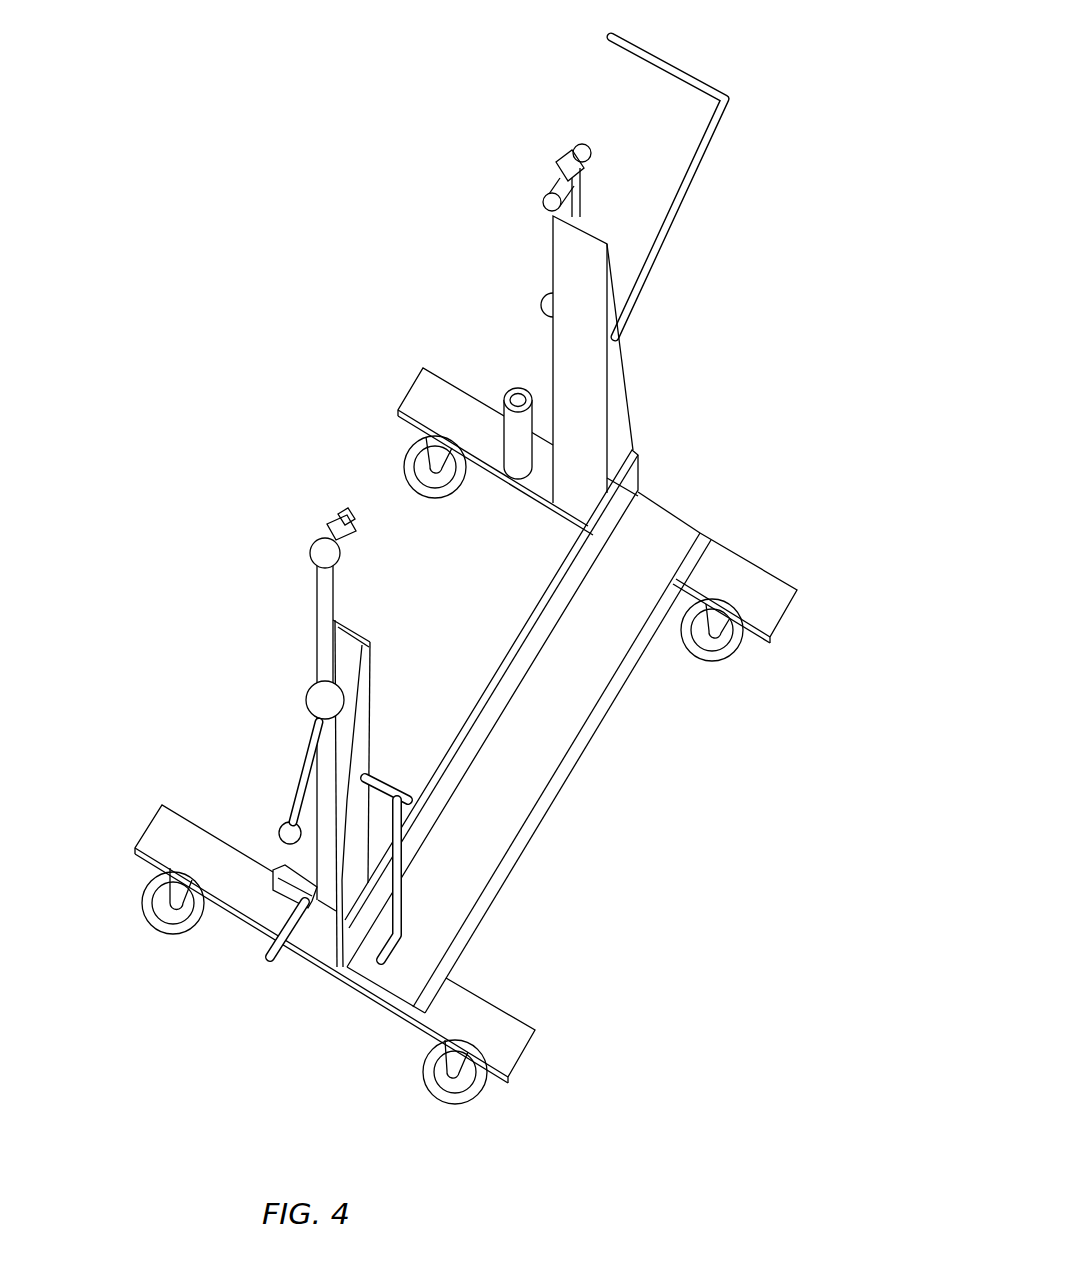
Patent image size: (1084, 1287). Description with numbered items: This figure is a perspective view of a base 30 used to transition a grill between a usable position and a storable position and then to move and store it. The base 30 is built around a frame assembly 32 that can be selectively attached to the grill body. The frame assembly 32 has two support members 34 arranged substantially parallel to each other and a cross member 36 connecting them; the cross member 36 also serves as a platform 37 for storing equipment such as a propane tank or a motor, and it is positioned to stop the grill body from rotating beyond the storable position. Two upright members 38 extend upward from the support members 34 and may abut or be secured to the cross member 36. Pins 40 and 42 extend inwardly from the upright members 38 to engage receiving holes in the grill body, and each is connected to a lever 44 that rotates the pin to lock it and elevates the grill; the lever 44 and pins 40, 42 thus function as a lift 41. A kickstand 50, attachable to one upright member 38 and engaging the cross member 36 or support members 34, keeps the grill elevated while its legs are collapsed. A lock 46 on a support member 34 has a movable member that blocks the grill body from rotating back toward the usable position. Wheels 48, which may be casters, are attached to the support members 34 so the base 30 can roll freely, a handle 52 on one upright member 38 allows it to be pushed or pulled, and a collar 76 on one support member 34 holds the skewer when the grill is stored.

The base 30 is at (501, 578).
The frame assembly 32 is at (511, 488).
The support members 34 is at (503, 725).
The cross member 36 is at (528, 731).
The platform 37 is at (533, 730).
The upright members 38 is at (546, 591).
The pin 40 is at (290, 684).
The lift 41 is at (366, 736).
The pin 42 is at (521, 180).
The lever 44 is at (368, 554).
The lock 46 is at (245, 934).
The wheels 48 is at (443, 768).
The kickstand 50 is at (489, 869).
The handle 52 is at (682, 173).
The collar 76 is at (473, 402).